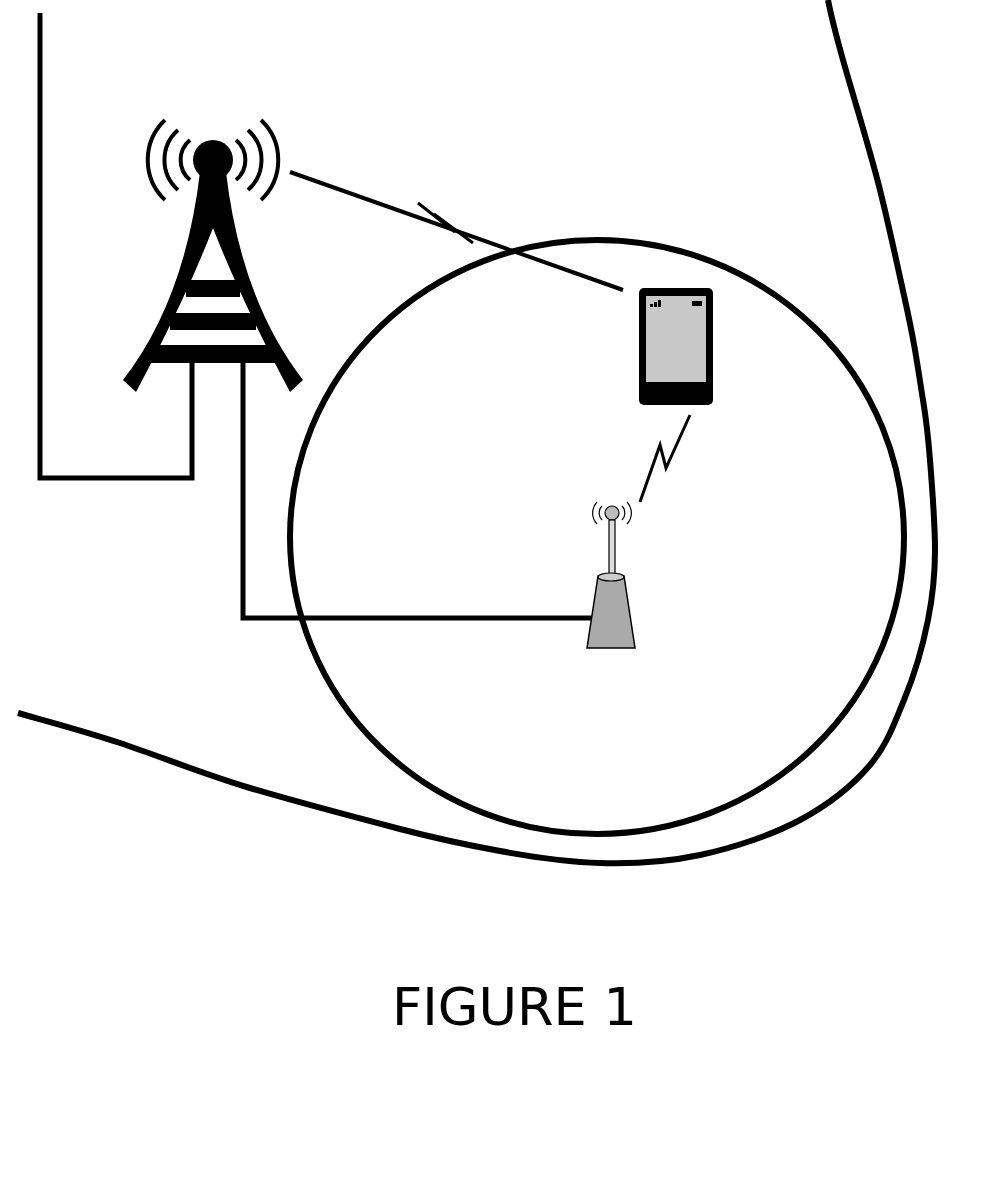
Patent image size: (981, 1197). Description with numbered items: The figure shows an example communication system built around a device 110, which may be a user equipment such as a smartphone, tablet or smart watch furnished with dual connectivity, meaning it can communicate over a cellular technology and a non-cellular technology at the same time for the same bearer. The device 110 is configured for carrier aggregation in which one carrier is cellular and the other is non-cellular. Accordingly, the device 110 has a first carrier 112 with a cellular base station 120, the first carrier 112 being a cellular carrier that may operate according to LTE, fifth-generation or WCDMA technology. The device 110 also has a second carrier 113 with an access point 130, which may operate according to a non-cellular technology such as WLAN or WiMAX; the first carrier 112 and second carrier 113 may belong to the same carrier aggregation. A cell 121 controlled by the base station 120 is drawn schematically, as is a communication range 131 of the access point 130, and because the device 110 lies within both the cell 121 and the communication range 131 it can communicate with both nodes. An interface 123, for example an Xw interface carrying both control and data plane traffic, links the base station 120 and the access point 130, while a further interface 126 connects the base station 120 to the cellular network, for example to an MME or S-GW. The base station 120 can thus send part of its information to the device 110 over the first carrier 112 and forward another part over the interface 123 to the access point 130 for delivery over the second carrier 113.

The device 110 is at (688, 288).
The first carrier 112 is at (482, 232).
The second carrier 113 is at (653, 462).
The cellular base station 120 is at (172, 302).
The cell 121 is at (118, 745).
The interface 123 is at (243, 590).
The interface 126 is at (40, 100).
The access point 130 is at (634, 618).
The communication range 131 is at (382, 752).